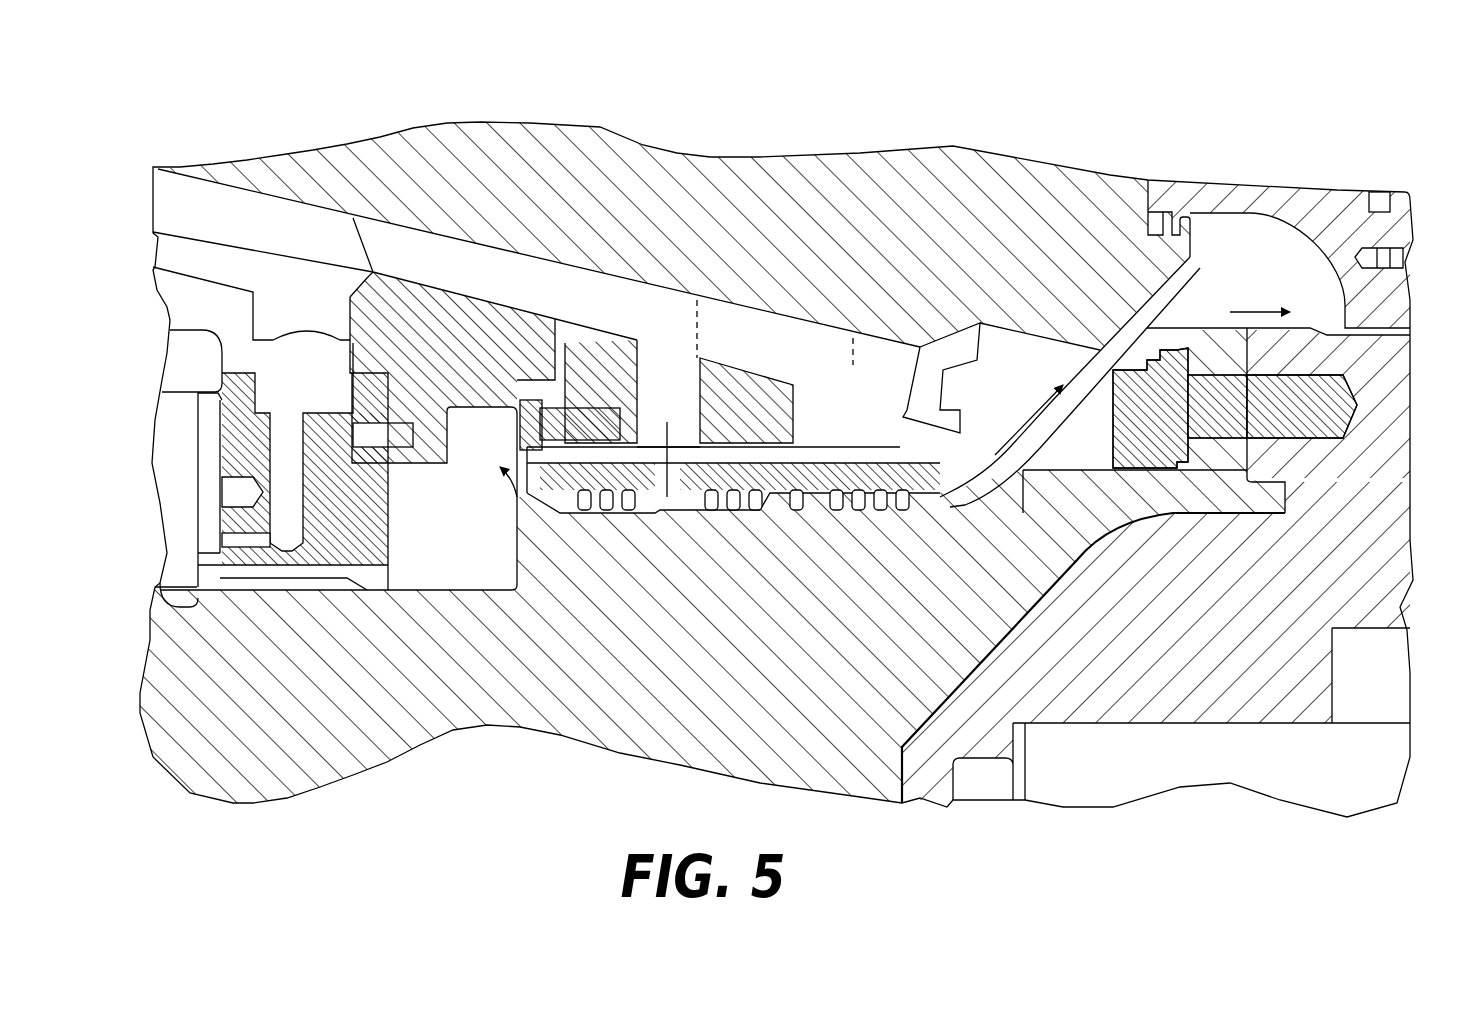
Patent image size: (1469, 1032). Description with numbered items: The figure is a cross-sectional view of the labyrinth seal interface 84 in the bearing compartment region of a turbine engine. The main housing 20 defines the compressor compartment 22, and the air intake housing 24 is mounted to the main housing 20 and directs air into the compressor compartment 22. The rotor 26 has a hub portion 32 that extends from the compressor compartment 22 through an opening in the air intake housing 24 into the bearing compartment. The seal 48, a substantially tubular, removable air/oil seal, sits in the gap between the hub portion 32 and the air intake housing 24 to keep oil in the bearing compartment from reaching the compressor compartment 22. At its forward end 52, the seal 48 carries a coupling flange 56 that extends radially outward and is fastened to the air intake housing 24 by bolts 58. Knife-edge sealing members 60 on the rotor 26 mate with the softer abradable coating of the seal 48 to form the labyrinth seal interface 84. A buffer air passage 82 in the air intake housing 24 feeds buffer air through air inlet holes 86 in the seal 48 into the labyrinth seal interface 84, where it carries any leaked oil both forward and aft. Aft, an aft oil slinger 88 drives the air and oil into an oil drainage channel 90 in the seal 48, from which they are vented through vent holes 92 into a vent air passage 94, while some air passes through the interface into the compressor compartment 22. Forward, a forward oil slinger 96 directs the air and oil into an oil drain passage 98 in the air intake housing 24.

The main housing 20 is at (1405, 190).
The compressor compartment 22 is at (1241, 276).
The air intake housing 24 is at (988, 262).
The rotor 26 is at (1020, 618).
The hub portion 32 is at (808, 714).
The seal 48 is at (977, 455).
The forward end 52 is at (487, 433).
The coupling flange 56 is at (550, 380).
The bolts 58 is at (532, 378).
The knife-edge sealing members 60 is at (737, 513).
The buffer air passage 82 is at (590, 290).
The labyrinth seal interface 84 is at (613, 550).
The air inlet holes 86 is at (713, 445).
The aft oil slinger 88 is at (807, 517).
The oil drainage channel 90 is at (840, 517).
The vent holes 92 is at (893, 513).
The vent air passage 94 is at (823, 400).
The forward oil slinger 96 is at (517, 497).
The oil drain passage 98 is at (450, 590).